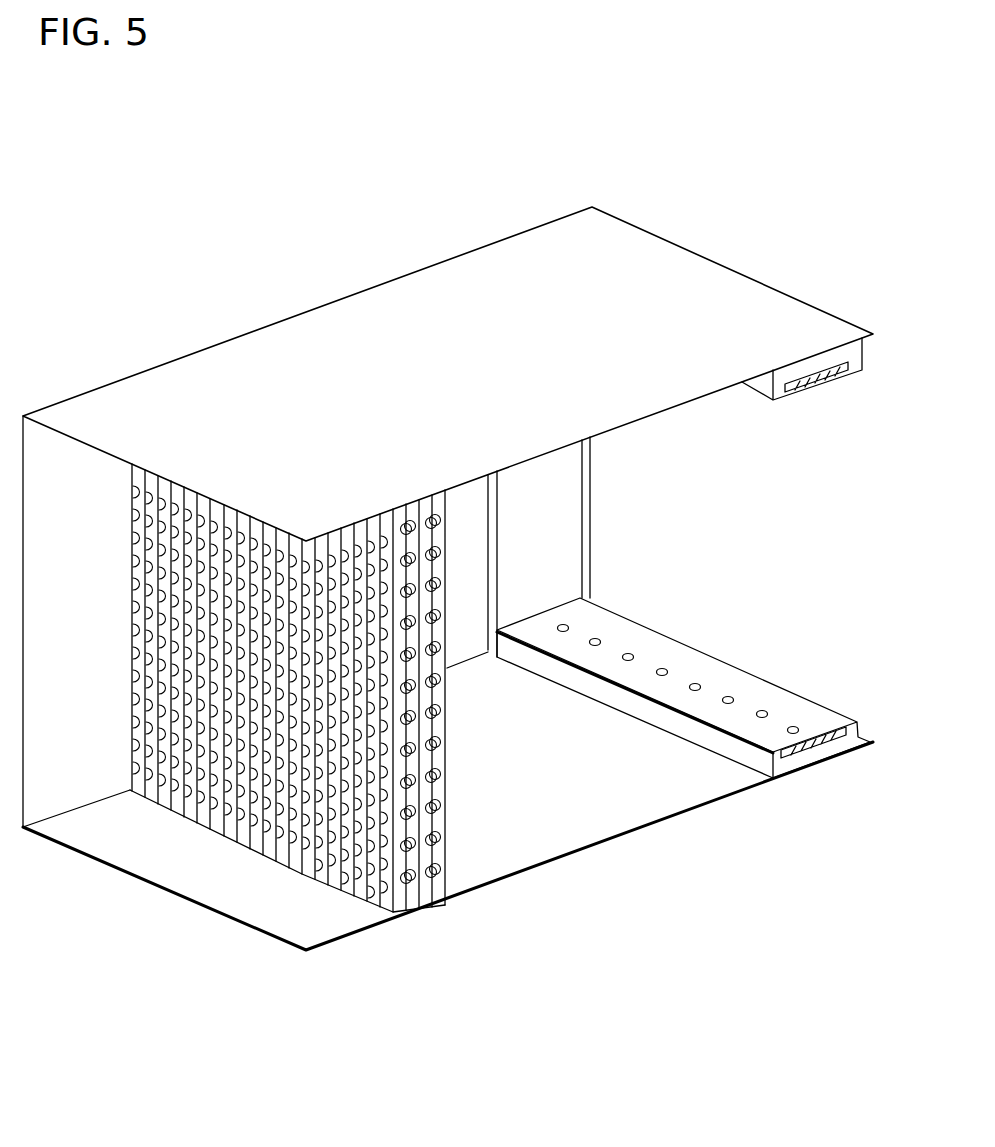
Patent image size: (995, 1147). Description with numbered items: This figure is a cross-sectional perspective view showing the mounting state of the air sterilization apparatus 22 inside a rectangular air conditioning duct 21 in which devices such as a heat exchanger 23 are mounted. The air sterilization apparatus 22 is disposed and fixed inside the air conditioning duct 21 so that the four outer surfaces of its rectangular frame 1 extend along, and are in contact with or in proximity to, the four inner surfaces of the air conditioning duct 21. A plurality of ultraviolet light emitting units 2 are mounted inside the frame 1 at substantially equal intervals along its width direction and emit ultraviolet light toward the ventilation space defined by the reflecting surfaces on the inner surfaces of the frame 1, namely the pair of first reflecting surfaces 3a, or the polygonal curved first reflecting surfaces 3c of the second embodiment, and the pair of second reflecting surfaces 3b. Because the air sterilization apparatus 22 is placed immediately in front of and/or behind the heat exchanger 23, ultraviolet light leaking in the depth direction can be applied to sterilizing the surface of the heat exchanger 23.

The frame 1 is at (687, 745).
The ultraviolet light emitting unit 2 is at (760, 704).
The first reflecting surface 3a is at (683, 641).
The second reflecting surface 3b is at (557, 530).
The first reflecting surface 3c is at (643, 642).
The air conditioning duct 21 is at (280, 383).
The air sterilization apparatus 22 is at (733, 762).
The heat exchanger 23 is at (430, 883).